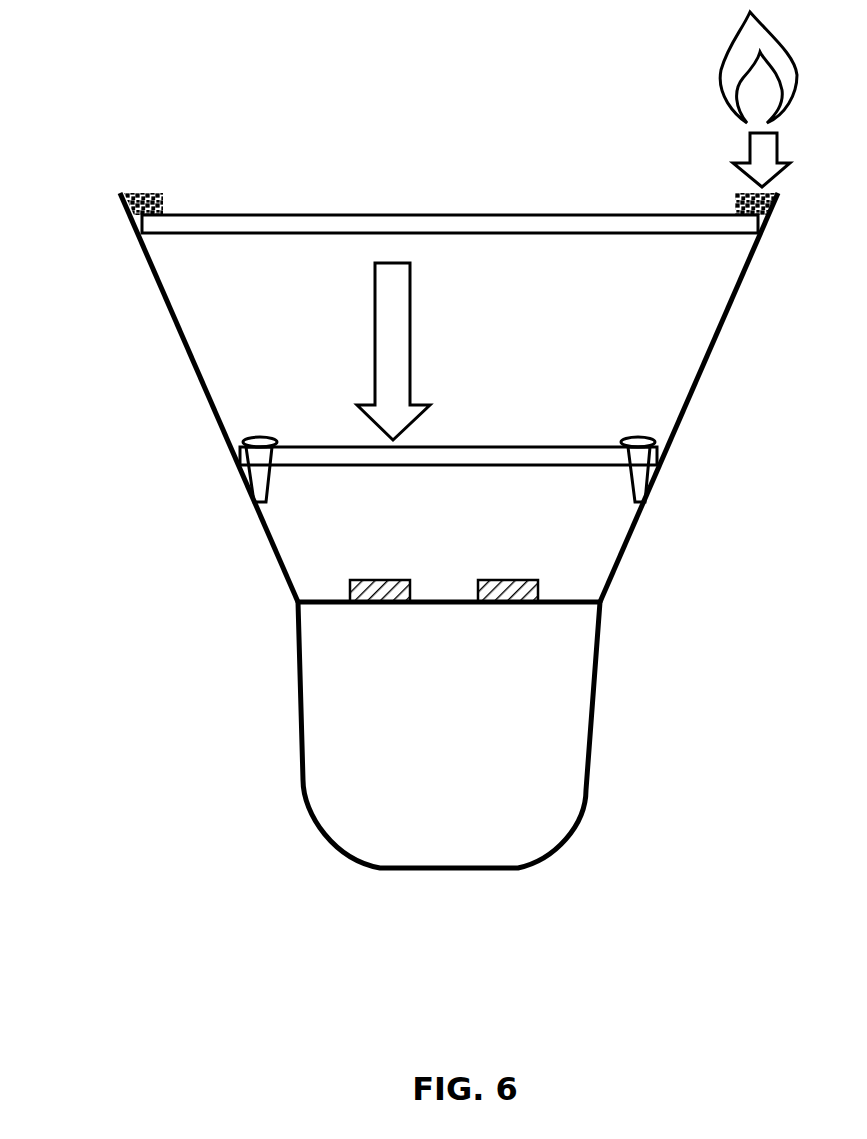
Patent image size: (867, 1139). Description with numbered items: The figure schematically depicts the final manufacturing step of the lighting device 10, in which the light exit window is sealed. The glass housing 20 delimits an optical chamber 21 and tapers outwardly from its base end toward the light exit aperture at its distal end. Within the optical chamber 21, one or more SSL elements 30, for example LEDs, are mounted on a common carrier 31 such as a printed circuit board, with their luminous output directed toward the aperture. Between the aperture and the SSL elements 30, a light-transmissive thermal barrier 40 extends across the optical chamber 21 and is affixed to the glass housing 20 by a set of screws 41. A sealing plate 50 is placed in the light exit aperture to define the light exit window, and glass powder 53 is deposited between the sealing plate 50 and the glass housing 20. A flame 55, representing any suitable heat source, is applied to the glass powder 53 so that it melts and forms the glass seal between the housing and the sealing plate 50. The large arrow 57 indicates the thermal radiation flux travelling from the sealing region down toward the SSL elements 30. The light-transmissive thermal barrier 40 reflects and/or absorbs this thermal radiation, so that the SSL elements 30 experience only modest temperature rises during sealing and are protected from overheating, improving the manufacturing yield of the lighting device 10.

The lighting device 10 is at (443, 1024).
The glass housing 20 is at (280, 557).
The optical chamber 21 is at (237, 370).
The SSL element 30 is at (387, 595).
The common carrier 31 is at (553, 602).
The light-transmissive thermal barrier 40 is at (514, 462).
The screw 41 is at (637, 437).
The sealing plate 50 is at (592, 232).
The glass powder 53 is at (153, 195).
The flame 55 is at (745, 60).
The heat flow direction 57 is at (397, 280).